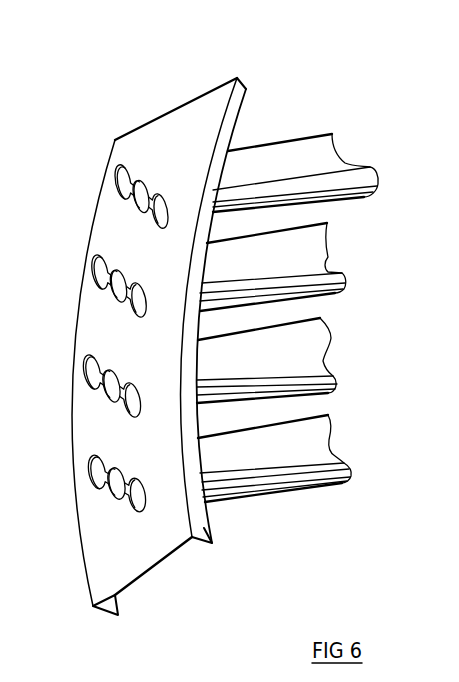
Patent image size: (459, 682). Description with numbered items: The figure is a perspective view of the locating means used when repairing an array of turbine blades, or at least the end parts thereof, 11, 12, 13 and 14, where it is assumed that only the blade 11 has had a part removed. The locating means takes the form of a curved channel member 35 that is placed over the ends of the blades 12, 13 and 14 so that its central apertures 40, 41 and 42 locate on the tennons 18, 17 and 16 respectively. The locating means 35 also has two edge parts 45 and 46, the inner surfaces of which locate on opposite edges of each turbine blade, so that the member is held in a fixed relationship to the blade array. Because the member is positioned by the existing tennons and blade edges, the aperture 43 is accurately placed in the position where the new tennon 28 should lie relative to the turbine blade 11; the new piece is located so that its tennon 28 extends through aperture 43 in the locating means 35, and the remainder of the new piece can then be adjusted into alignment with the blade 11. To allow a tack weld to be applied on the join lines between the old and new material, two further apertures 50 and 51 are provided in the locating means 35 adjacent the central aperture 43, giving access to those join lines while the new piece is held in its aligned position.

The turbine blade 11 is at (361, 197).
The turbine blade 12 is at (338, 292).
The turbine blade 13 is at (334, 391).
The turbine blade 14 is at (350, 479).
The tennon 16 is at (110, 290).
The tennon 17 is at (106, 384).
The tennon 18 is at (110, 489).
The new tennon 28 is at (166, 182).
The curved channel member 35 is at (192, 110).
The central aperture 40 is at (115, 499).
The central aperture 41 is at (111, 404).
The central aperture 42 is at (120, 272).
The aperture 43 is at (142, 180).
The edge part 45 is at (102, 612).
The edge part 46 is at (212, 546).
The further aperture 50 is at (116, 182).
The further aperture 51 is at (156, 216).